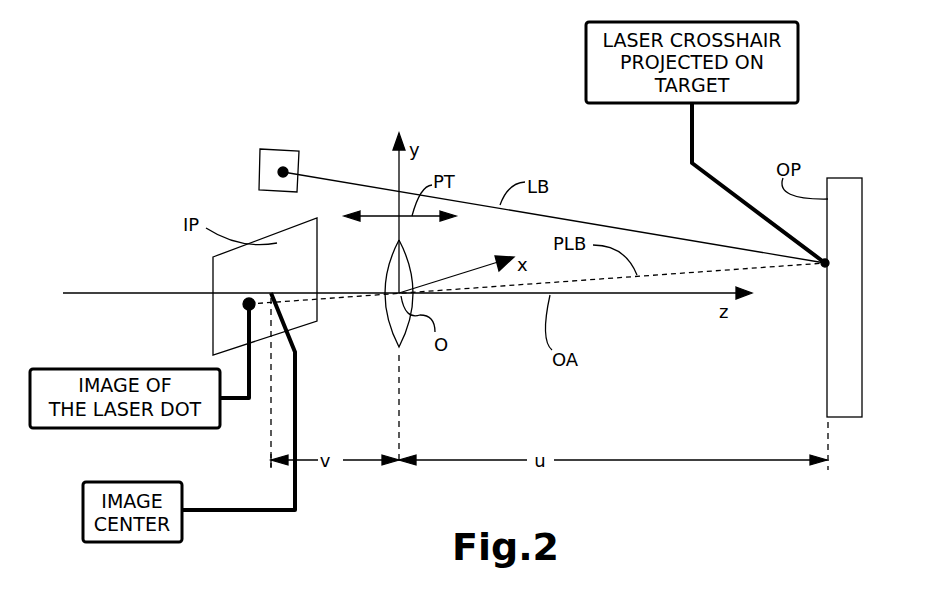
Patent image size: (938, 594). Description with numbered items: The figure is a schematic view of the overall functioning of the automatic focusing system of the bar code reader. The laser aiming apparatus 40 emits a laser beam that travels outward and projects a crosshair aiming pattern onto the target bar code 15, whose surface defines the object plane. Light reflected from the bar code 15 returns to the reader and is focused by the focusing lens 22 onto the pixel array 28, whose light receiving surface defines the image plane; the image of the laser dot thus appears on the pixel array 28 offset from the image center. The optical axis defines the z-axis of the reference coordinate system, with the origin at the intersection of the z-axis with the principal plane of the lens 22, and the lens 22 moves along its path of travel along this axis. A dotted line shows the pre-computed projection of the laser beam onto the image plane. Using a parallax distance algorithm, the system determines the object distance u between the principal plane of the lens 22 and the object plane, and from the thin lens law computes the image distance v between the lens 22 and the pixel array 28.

The target bar code 15 is at (842, 418).
The focusing lens 22 is at (387, 318).
The pixel array 28 is at (213, 320).
The aiming pattern generator 40 is at (285, 157).